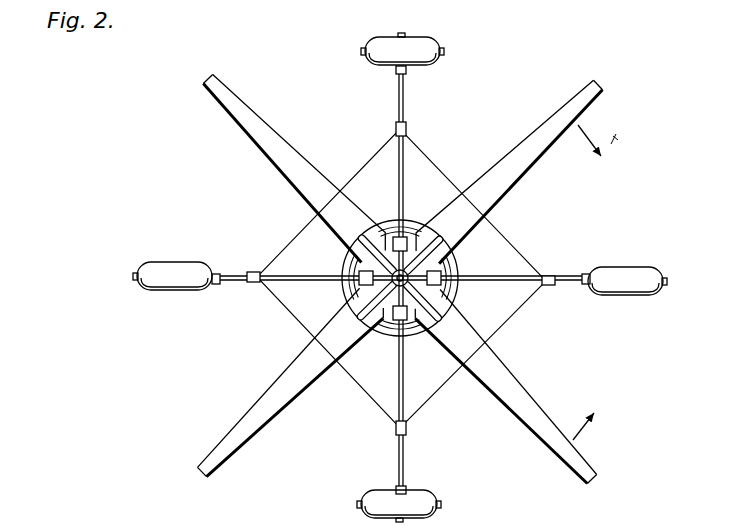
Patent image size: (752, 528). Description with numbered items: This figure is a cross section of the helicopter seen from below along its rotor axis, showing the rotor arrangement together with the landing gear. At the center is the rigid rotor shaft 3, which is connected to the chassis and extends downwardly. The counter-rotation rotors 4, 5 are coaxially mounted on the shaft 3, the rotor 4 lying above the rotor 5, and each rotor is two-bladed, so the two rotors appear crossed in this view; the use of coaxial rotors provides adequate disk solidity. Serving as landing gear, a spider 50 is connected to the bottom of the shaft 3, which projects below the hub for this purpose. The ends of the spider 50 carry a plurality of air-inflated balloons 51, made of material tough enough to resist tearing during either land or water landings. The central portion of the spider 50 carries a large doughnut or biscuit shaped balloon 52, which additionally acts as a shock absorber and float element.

The rotor shaft 3 is at (385, 338).
The counter-rotation rotor 4 is at (535, 409).
The counter-rotation rotor 5 is at (523, 158).
The spider 50 is at (292, 284).
The air-inflated balloons 51 is at (426, 45).
The doughnut shaped balloon 52 is at (458, 262).